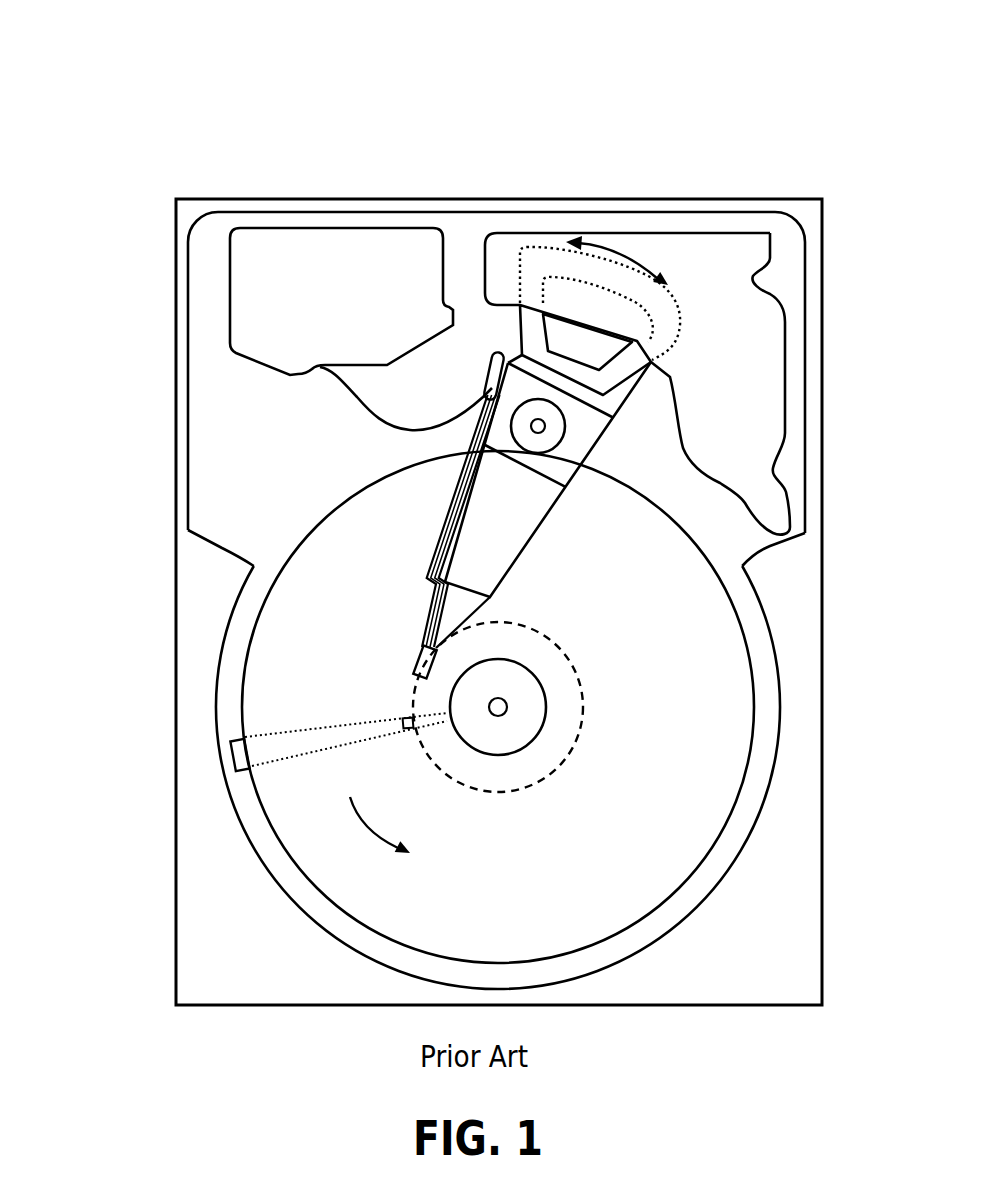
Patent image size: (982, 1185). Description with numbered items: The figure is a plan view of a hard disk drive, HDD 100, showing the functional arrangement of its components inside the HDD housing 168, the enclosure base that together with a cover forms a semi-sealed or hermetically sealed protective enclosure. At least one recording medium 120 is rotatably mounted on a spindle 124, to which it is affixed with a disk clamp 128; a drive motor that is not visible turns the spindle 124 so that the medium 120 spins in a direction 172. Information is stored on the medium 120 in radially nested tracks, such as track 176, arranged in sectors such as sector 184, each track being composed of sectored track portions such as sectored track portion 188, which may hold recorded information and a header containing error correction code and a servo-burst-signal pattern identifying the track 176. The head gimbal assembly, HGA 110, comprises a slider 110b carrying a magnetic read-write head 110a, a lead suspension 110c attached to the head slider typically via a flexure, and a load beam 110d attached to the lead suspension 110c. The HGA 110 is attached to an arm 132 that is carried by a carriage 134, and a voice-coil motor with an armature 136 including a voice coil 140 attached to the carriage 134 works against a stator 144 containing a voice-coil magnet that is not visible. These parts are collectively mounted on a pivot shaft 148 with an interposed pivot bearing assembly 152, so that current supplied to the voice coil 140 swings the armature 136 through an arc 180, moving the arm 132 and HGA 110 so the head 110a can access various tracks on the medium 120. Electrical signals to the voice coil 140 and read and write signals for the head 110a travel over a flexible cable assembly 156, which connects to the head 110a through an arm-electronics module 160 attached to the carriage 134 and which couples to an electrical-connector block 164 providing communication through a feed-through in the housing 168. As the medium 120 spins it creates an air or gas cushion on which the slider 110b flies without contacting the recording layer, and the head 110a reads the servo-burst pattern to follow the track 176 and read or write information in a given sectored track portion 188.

The hard disk drive 100 is at (99, 73).
The head gimbal assembly 110 is at (102, 508).
The magnetic read-write head 110a is at (426, 673).
The slider 110b is at (432, 637).
The lead suspension 110c is at (440, 605).
The load beam 110d is at (452, 583).
The recording medium 120 is at (682, 658).
The spindle 124 is at (507, 707).
The disk clamp 128 is at (524, 724).
The arm 132 is at (492, 542).
The carriage 134 is at (560, 458).
The armature 136 is at (515, 345).
The voice coil 140 is at (533, 317).
The stator 144 is at (752, 330).
The pivot shaft 148 is at (546, 426).
The pivot bearing assembly 152 is at (552, 438).
The flexible cable assembly 156 is at (352, 400).
The arm-electronics module 160 is at (485, 388).
The electrical-connector block 164 is at (255, 300).
The HDD housing 168 is at (802, 212).
The direction of medium spin 172 is at (386, 826).
The track 176 is at (573, 666).
The arc 180 is at (617, 252).
The sector 184 is at (232, 750).
The sectored track portion 188 is at (405, 720).